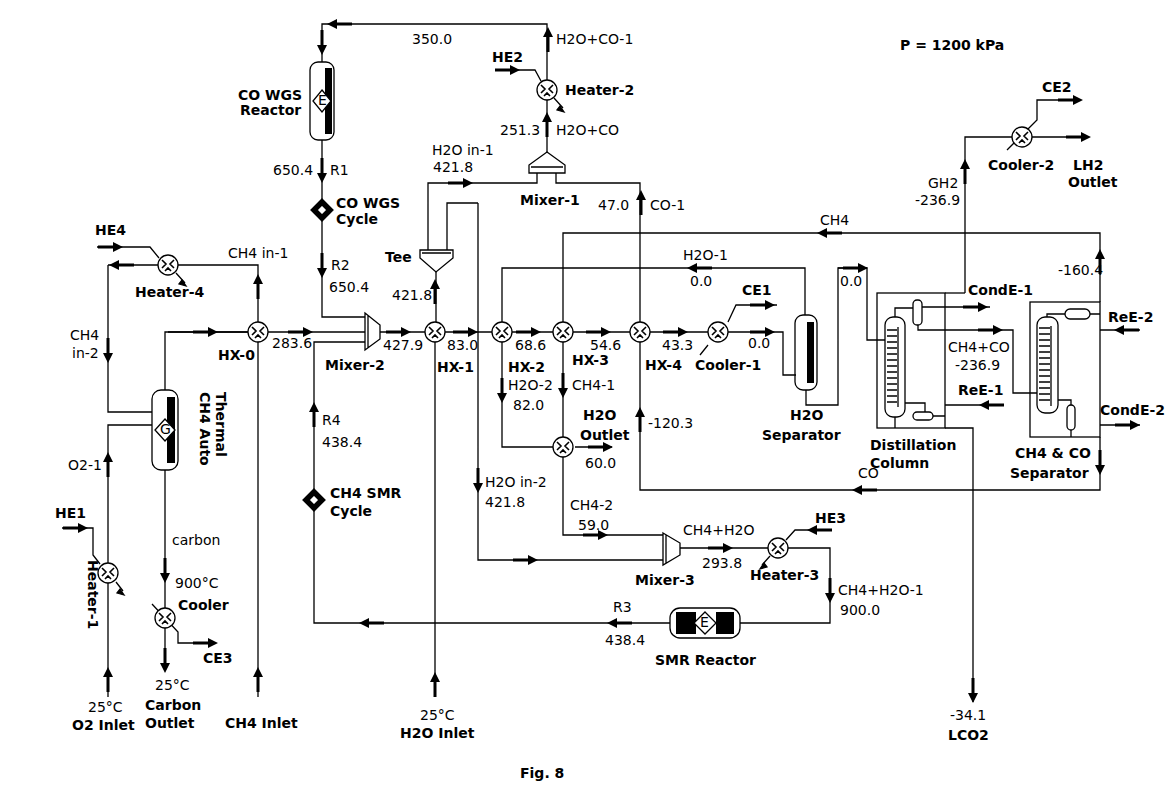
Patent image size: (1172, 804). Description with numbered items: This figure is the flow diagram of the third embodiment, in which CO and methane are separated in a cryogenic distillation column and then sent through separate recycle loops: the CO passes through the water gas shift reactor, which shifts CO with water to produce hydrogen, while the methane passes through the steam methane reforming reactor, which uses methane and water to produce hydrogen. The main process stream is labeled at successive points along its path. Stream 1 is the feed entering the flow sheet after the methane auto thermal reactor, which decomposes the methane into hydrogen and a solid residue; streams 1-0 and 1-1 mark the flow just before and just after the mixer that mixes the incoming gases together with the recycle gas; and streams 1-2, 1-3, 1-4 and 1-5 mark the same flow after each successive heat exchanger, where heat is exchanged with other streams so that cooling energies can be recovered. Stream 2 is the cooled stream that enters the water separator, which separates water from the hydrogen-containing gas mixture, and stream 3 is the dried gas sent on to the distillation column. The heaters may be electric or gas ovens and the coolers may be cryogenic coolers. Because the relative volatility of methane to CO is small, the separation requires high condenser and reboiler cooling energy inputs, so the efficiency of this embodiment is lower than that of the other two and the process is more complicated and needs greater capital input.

The methane feed stream 1 is at (208, 322).
The preheated methane stream 1-0 is at (316, 322).
The mixed stream after Mixer-2 1-1 is at (402, 323).
The stream after HX-1 1-2 is at (468, 323).
The stream after HX-2 1-3 is at (532, 323).
The stream after HX-3 1-4 is at (601, 323).
The stream after HX-4 1-5 is at (679, 323).
The cooled stream to H2O separator 2 is at (762, 342).
The CH4 and CO stream to distillation column 3 is at (853, 261).